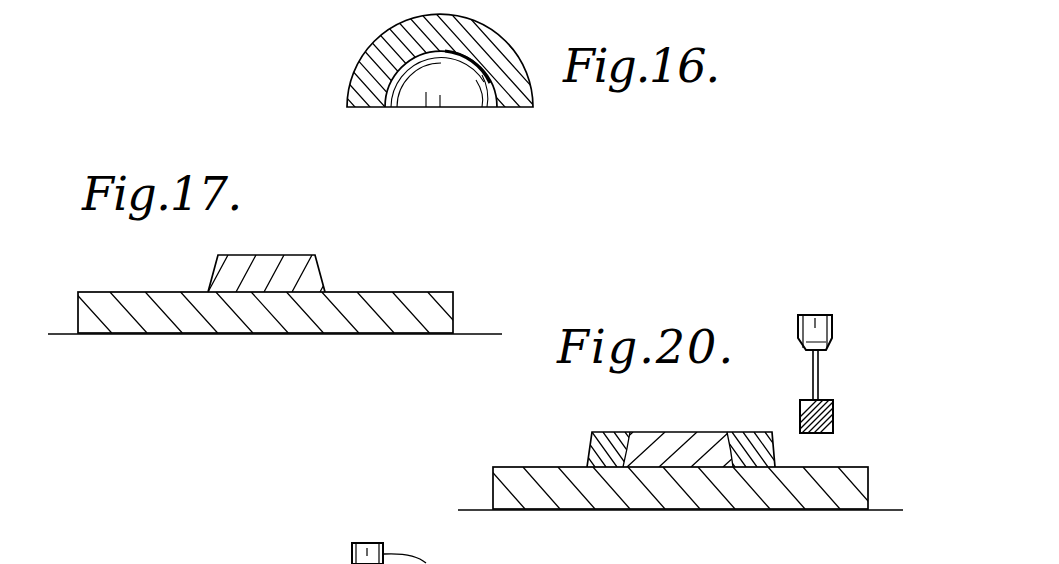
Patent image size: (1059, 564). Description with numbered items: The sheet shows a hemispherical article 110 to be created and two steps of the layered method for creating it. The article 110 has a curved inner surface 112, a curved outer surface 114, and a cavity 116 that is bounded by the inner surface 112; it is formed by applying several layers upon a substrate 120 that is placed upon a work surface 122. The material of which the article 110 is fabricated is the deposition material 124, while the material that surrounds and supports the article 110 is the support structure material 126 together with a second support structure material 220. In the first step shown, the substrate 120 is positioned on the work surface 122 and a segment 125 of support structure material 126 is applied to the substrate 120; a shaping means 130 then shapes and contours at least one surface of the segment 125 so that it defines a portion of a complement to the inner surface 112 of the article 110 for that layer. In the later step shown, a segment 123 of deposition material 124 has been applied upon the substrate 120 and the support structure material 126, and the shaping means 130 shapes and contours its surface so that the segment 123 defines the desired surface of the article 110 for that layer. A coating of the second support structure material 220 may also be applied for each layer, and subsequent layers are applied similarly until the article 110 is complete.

In FIG. 16, the hemispherical article 110 is at (412, 79).
In FIG. 16, the curved inner surface 112 is at (478, 80).
In FIG. 16, the curved outer surface 114 is at (388, 31).
In FIG. 16, the cavity 116 is at (426, 92).
In FIG. 17, the substrate 120 is at (223, 312).
In FIG. 20, the substrate 120 is at (692, 490).
In FIG. 17, the work surface 122 is at (480, 333).
In FIG. 20, the work surface 122 is at (477, 509).
In FIG. 20, the segment of deposition material 123 is at (597, 447).
In FIG. 20, the deposition material 124 is at (765, 450).
In FIG. 17, the segment of support structure material 125 is at (242, 259).
In FIG. 20, the segment of support structure material 125 is at (685, 467).
In FIG. 17, the support structure material 126 is at (223, 268).
In FIG. 20, the support structure material 126 is at (661, 435).
In FIG. 20, the shaping means 130 is at (834, 331).
In FIG. 20, the second support structure material 220 is at (642, 435).